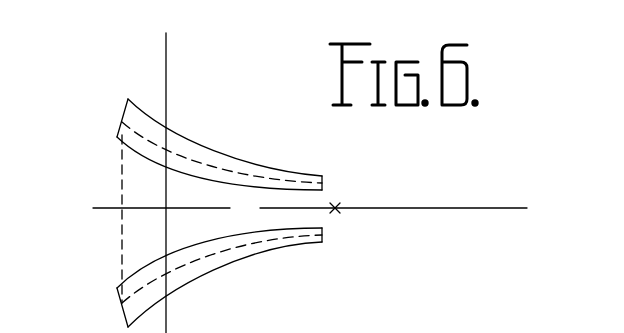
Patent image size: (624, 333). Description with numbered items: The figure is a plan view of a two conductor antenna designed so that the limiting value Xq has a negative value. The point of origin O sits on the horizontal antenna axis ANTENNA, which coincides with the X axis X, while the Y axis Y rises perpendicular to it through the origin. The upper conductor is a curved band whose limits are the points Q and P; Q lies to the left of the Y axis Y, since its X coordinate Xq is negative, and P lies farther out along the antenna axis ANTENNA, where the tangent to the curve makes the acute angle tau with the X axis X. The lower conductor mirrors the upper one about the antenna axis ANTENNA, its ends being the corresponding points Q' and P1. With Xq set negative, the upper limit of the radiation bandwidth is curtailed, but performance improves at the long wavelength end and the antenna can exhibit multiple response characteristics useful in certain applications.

The point of origin O is at (303, 183).
The Y axis Y is at (162, 50).
The antenna axis ANTENNA is at (403, 198).
The X axis X is at (118, 219).
The limit of the curve P is at (228, 156).
The limit of the curve Q is at (103, 112).
The limit of the curve of the second conductor P1 is at (232, 276).
The limit of the curve of the second conductor Q' is at (111, 314).